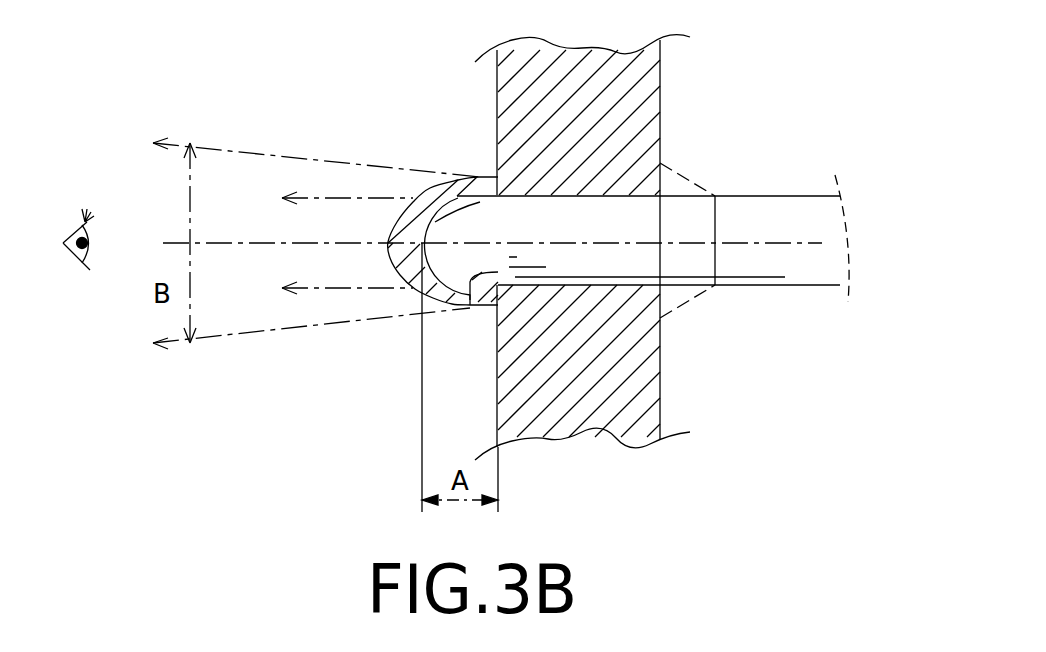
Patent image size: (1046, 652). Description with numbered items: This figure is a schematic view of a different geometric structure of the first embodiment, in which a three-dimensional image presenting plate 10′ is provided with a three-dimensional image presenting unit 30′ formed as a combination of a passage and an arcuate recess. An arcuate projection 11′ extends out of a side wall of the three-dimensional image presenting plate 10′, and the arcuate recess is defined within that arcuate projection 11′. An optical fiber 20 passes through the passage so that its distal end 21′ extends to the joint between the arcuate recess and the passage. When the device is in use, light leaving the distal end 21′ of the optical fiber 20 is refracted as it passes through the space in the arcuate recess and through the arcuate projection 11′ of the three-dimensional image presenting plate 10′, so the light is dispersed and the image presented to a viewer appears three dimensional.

The 3D image presenting plate 10′ is at (626, 55).
The arcuate projection 11′ is at (473, 173).
The optical fiber 20 is at (746, 206).
The distal end 21′ is at (470, 306).
The 3D image presenting unit 30′ is at (468, 218).